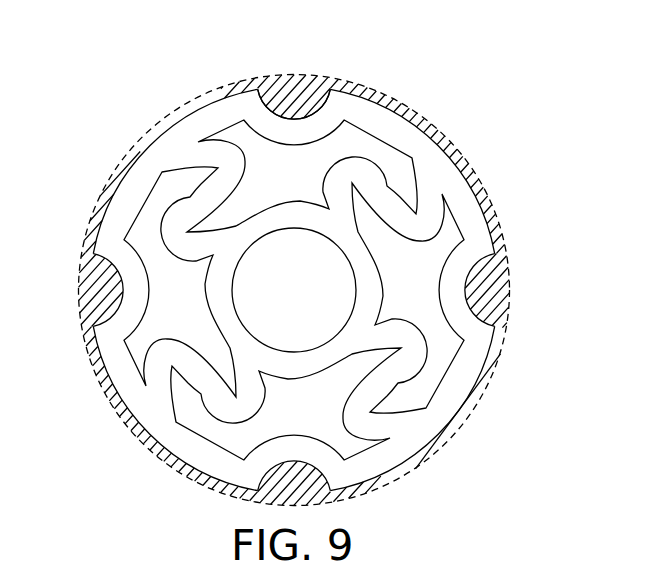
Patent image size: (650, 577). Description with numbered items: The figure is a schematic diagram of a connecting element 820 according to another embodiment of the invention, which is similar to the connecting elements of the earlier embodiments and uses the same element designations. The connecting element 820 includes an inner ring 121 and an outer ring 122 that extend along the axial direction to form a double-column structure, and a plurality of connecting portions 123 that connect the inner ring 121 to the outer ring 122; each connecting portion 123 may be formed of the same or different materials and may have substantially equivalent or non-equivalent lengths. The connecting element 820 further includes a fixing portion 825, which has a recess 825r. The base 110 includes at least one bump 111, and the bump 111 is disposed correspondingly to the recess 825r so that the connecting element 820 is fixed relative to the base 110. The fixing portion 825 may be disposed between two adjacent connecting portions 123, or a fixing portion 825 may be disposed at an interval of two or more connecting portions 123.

The base 110 is at (462, 166).
The bump 111 is at (296, 110).
The inner ring 121 is at (368, 278).
The outer ring 122 is at (394, 128).
The connecting portion 123 is at (188, 158).
The connecting element 820 is at (113, 184).
The fixing portion 825 is at (318, 124).
The recess 825r is at (278, 97).